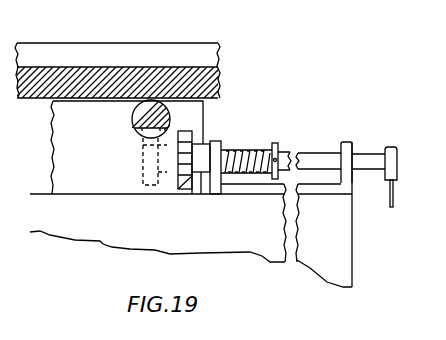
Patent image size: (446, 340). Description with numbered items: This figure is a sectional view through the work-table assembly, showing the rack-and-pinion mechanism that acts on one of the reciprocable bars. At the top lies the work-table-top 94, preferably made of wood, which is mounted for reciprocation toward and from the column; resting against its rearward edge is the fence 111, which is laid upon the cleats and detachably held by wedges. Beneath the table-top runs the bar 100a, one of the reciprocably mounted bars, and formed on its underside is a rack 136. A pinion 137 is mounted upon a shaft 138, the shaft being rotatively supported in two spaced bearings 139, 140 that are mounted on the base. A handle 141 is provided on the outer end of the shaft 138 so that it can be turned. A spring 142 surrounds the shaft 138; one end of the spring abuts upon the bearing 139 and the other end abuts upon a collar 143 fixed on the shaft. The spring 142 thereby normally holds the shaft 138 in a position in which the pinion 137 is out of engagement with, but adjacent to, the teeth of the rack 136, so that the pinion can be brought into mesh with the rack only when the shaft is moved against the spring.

The fence 111 is at (190, 47).
The work-table-top 94 is at (222, 68).
The bar 100a is at (134, 116).
The rack 136 is at (170, 119).
The pinion 137 is at (208, 141).
The bearing 139 is at (246, 148).
The spring 142 is at (268, 148).
The collar 143 is at (276, 144).
The bearing 140 is at (345, 141).
The shaft 138 is at (366, 157).
The handle 141 is at (394, 192).